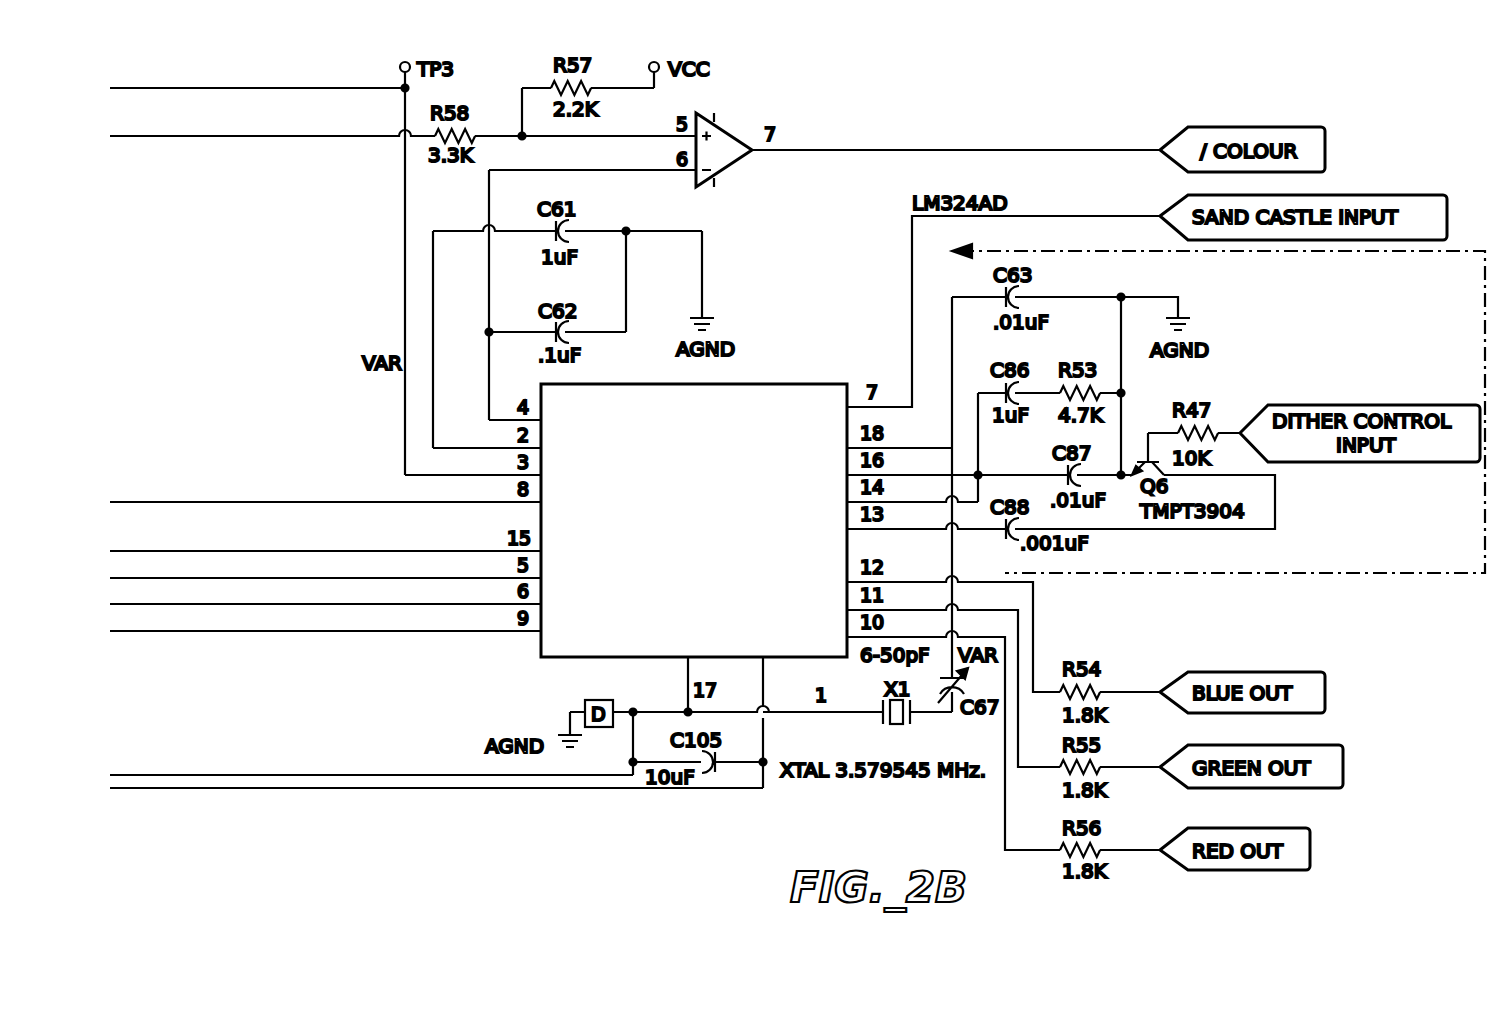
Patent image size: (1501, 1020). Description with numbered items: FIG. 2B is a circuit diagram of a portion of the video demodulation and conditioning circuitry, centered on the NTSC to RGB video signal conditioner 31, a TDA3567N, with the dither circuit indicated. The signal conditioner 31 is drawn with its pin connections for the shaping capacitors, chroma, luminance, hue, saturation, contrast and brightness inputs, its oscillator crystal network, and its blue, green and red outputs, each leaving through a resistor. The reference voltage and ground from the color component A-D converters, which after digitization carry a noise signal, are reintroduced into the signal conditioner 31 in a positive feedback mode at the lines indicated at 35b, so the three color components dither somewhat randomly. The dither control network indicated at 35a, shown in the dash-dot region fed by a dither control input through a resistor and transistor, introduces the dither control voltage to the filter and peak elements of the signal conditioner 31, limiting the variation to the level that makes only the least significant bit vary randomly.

The signal conditioner 31 is at (790, 384).
The dither control 35a is at (1322, 575).
The positive feedback reintroduction of reference voltage and ground 35b is at (318, 760).